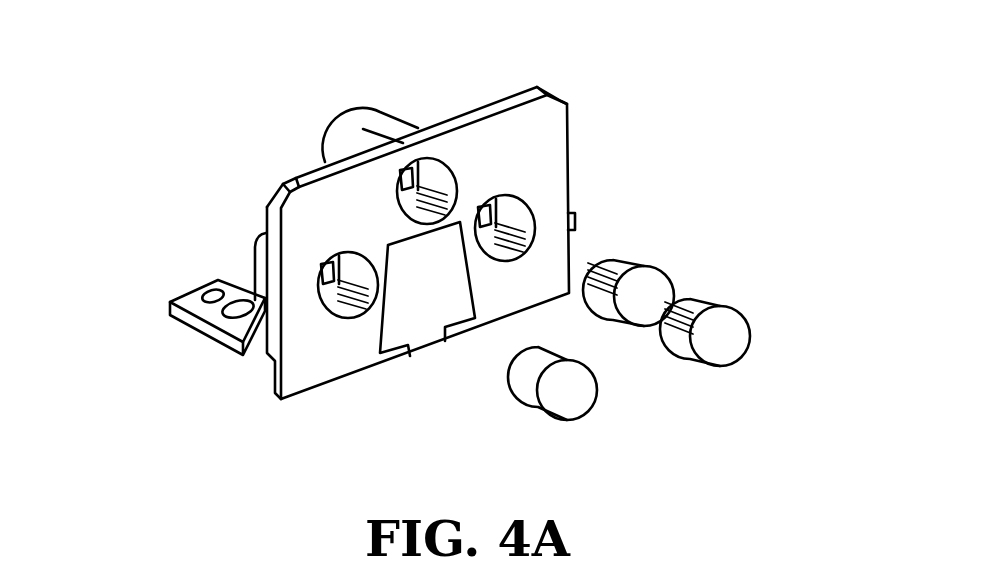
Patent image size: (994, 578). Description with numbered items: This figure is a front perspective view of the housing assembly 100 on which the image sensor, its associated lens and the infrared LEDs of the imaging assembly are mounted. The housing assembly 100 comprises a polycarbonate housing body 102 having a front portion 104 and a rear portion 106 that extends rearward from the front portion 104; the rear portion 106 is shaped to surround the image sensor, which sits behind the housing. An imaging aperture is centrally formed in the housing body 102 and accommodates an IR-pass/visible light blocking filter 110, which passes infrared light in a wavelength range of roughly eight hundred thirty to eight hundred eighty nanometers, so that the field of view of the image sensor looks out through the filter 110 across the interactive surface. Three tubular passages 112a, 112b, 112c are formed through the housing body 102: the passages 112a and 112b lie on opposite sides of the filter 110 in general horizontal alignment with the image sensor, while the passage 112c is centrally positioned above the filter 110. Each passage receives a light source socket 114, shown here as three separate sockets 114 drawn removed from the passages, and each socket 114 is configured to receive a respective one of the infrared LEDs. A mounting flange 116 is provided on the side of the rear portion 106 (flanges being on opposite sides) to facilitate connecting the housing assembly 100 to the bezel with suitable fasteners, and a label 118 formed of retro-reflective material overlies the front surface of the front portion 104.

The housing assembly 100 is at (245, 147).
The housing body 102 is at (232, 412).
The front portion 104 is at (302, 213).
The rear portion 106 is at (350, 145).
The IR-pass/visible light blocking filter 110 is at (430, 292).
The passage 112a is at (335, 305).
The passage 112b is at (517, 206).
The passage 112c is at (433, 180).
The light source socket 114 is at (648, 292).
The mounting flange 116 is at (217, 315).
The label 118 is at (520, 155).